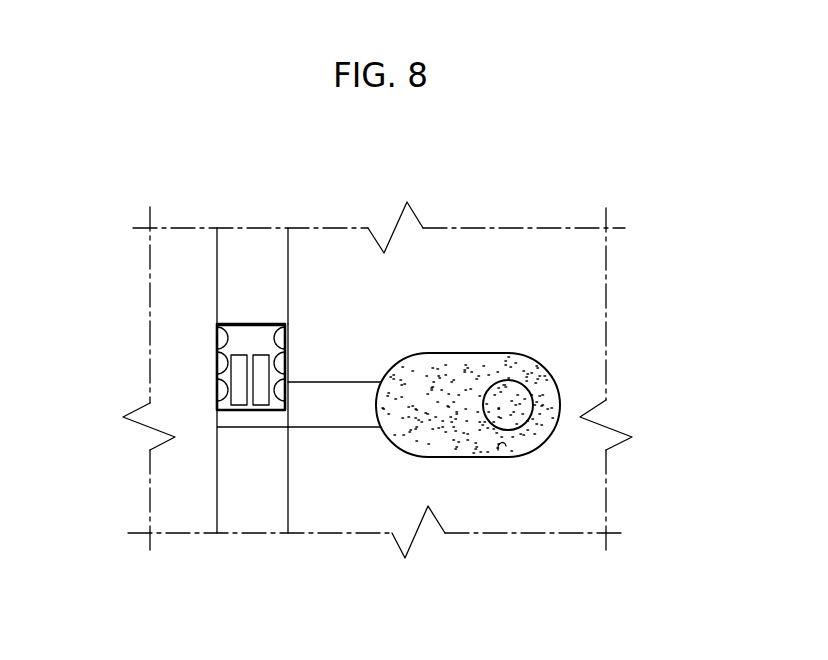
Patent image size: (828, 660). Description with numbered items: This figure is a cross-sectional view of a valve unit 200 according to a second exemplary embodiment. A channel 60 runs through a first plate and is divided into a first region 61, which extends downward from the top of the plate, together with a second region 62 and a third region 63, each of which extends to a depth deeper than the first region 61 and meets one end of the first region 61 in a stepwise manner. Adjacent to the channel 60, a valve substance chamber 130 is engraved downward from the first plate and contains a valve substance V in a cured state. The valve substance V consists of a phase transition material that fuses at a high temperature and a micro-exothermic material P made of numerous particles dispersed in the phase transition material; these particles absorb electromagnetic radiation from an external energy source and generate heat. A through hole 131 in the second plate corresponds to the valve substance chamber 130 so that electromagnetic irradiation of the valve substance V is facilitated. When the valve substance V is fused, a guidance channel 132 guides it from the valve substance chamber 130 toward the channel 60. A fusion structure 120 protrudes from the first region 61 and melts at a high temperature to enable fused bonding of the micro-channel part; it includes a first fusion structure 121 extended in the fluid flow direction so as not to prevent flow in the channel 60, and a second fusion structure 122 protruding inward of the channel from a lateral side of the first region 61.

The channel 60 is at (194, 419).
The first region 61 is at (238, 330).
The second region 62 is at (248, 268).
The third region 63 is at (240, 463).
The fusion structure 120 is at (193, 290).
The first fusion structure 121 is at (222, 342).
The second fusion structure 122 is at (240, 382).
The valve substance chamber 130 is at (529, 432).
The through hole 131 is at (530, 398).
The guidance channel 132 is at (340, 384).
The valve unit 200 is at (628, 278).
The micro-exothermic material P is at (510, 362).
The valve substance V is at (498, 450).